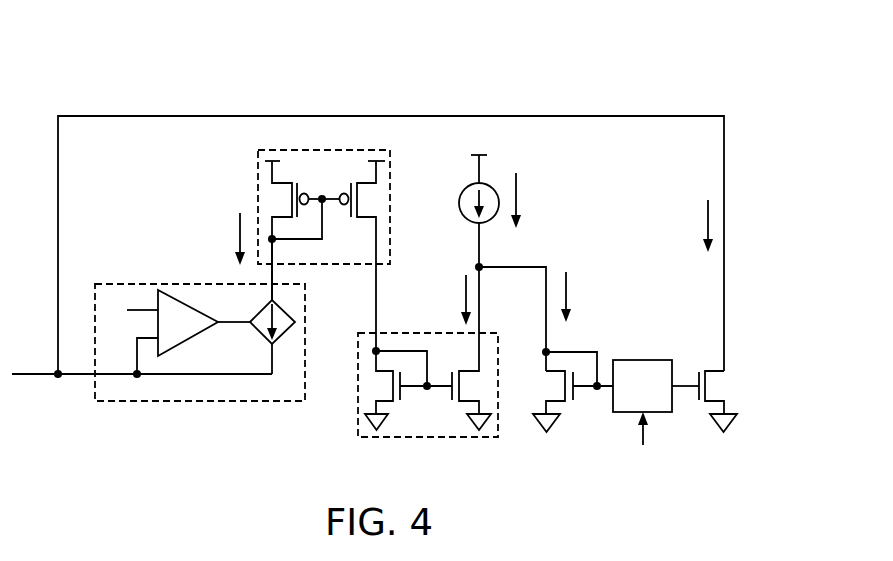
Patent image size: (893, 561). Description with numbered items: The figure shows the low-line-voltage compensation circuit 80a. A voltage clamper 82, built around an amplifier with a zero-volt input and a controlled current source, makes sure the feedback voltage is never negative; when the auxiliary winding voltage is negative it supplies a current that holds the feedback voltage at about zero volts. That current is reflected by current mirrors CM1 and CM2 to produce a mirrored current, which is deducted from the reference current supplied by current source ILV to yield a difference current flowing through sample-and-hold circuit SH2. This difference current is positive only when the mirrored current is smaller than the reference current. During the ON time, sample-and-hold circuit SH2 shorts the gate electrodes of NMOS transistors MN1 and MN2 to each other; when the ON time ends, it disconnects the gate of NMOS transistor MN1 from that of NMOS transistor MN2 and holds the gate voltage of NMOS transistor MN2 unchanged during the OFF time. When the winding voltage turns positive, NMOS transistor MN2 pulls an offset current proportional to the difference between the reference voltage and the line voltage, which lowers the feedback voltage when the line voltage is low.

The low-line-voltage compensation circuit 80a is at (152, 74).
The voltage clamper 82 is at (228, 401).
The current mirror CM1 is at (258, 203).
The current mirror CM2 is at (358, 395).
The current source ILV is at (459, 203).
The NMOS transistor MN1 is at (561, 390).
The NMOS transistor MN2 is at (713, 401).
The sample-and-hold circuit SH2 is at (628, 360).